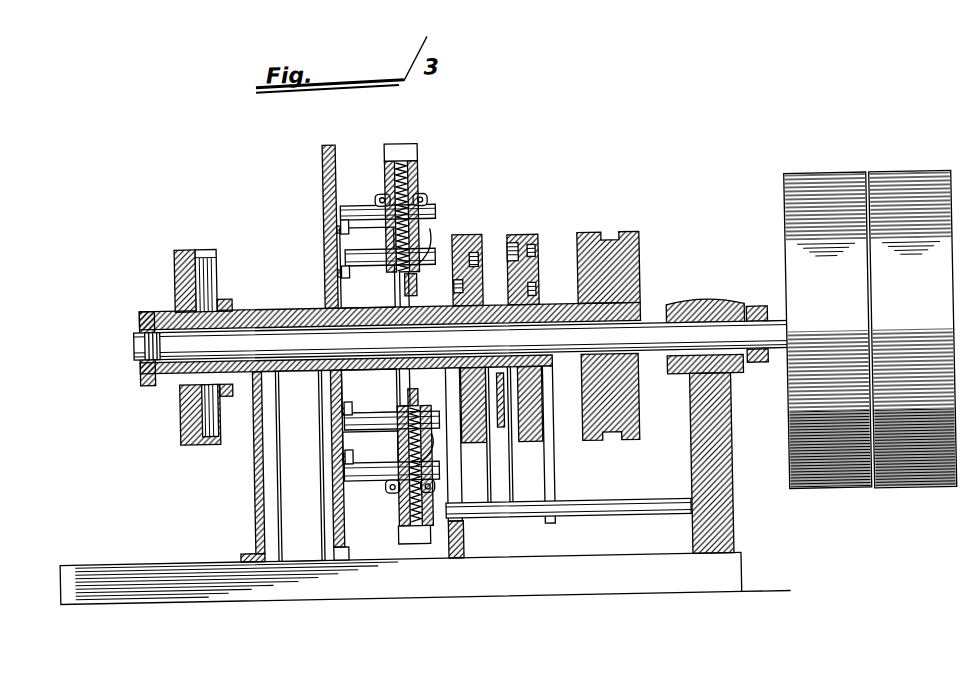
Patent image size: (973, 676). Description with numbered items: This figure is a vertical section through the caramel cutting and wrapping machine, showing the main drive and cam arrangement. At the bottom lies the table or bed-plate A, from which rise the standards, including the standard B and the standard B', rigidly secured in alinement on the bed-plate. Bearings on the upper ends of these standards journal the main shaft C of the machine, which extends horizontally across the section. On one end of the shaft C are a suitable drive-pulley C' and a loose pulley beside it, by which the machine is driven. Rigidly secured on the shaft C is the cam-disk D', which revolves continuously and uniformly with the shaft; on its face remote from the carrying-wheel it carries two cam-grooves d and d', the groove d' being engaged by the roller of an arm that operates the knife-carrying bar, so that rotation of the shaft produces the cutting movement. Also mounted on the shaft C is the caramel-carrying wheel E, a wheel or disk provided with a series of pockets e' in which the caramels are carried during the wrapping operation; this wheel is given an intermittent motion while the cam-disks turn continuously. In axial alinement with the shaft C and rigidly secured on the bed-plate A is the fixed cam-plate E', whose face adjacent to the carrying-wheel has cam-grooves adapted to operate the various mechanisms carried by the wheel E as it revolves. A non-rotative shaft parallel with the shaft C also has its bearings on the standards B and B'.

The table or bed-plate A is at (725, 577).
The standard B is at (455, 401).
The standard B' is at (457, 432).
The main shaft C is at (462, 317).
The drive-pulley C' is at (912, 314).
The cam-disk D' is at (520, 359).
The caramel-carrying wheel E is at (397, 336).
The fixed cam-plate E' is at (322, 352).
The cam-groove d is at (546, 242).
The cam-groove d' is at (549, 296).
The pockets e' is at (407, 373).